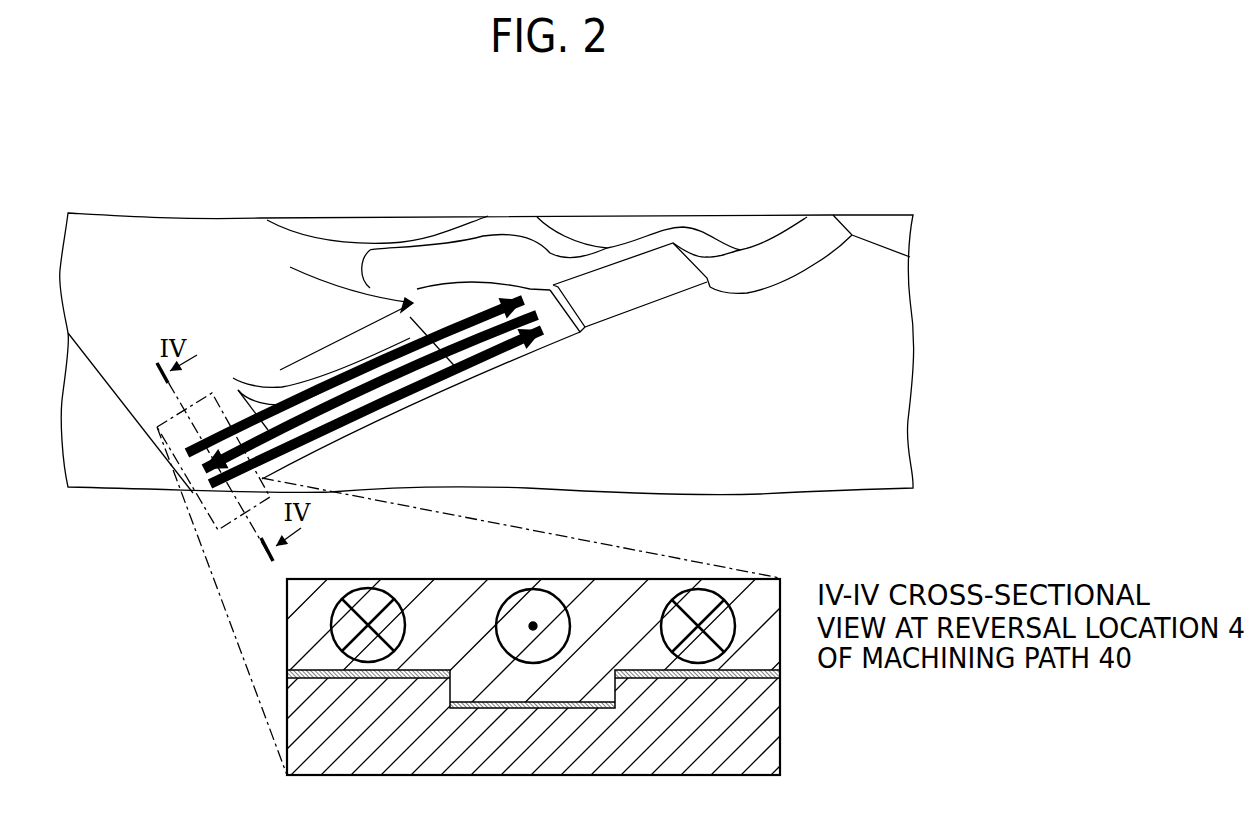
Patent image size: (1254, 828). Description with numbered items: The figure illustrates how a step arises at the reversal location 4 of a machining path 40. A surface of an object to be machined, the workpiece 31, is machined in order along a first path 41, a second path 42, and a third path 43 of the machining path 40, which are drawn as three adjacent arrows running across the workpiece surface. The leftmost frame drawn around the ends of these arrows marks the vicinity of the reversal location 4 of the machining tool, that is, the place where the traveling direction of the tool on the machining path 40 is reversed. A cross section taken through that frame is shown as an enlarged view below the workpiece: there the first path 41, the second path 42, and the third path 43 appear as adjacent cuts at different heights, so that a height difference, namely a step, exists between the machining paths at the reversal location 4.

The object to be machined (workpiece) 31 is at (213, 235).
The machining path 40 is at (461, 477).
The first path 41 is at (497, 300).
The second path 42 is at (453, 347).
The third path 43 is at (402, 390).
The reversal location 4 is at (193, 503).